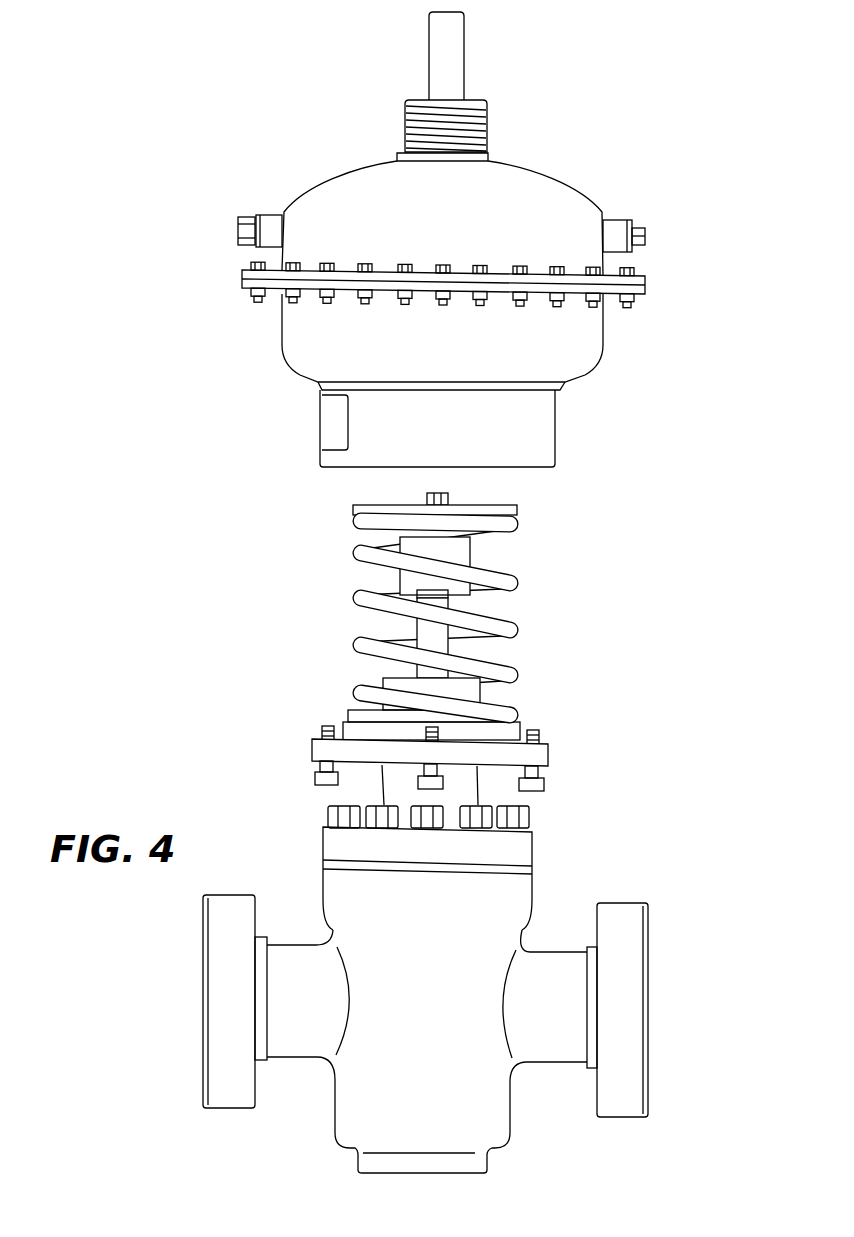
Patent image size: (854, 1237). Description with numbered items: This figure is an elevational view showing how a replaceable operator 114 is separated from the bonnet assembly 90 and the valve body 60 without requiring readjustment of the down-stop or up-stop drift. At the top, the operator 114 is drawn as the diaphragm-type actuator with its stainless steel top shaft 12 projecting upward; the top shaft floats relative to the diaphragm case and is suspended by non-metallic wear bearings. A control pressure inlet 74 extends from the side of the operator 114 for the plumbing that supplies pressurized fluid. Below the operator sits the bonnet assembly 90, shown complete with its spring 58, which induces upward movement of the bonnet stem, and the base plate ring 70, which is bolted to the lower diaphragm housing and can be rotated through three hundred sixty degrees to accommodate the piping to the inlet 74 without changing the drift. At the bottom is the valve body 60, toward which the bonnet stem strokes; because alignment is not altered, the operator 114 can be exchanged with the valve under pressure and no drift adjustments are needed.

The top shaft 12 is at (465, 25).
The operator 114 is at (520, 183).
The control pressure inlet 74 is at (630, 222).
The spring 58 is at (510, 575).
The bonnet assembly 90 is at (537, 632).
The base plate ring 70 is at (549, 757).
The valve body 60 is at (483, 935).